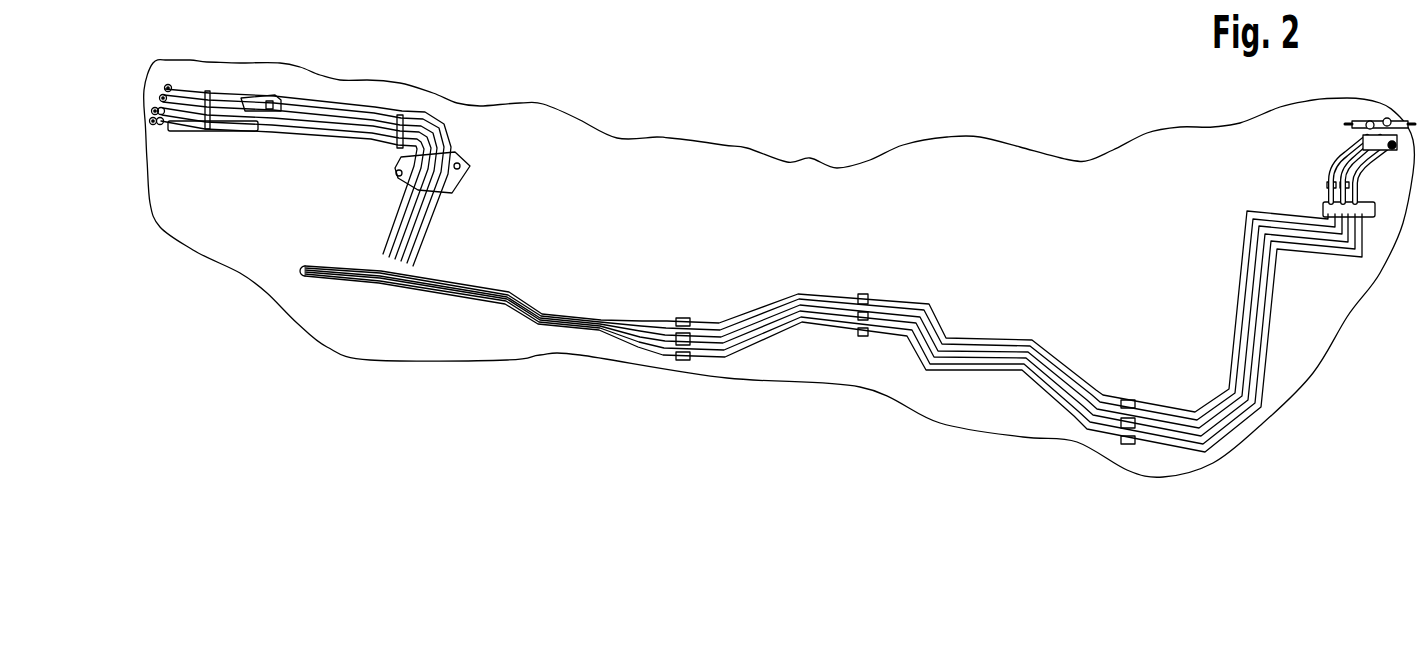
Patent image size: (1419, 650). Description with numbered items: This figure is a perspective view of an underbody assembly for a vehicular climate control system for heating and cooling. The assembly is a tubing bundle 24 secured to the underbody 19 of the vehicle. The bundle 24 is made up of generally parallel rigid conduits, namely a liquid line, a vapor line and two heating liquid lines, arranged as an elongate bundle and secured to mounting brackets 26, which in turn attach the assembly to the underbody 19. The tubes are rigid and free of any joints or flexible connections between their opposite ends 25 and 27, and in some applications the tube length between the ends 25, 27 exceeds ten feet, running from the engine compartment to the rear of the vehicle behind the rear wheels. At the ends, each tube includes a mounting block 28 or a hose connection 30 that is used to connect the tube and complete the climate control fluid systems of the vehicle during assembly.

The underbody 19 is at (584, 247).
The tubing bundle 24 is at (947, 308).
The end 25 is at (176, 70).
The mounting bracket 26 is at (466, 170).
The end 27 is at (1308, 195).
The mounting block 28 is at (157, 127).
The hose connection 30 is at (1350, 150).